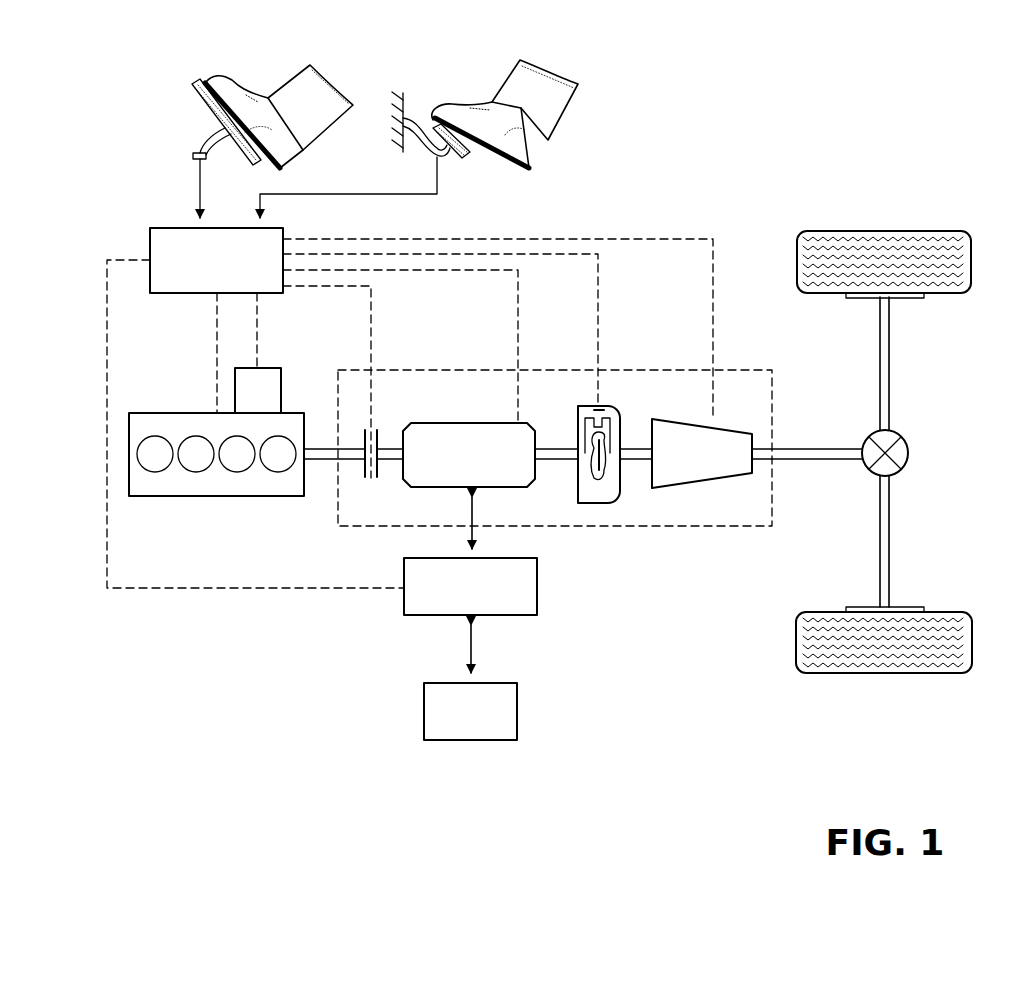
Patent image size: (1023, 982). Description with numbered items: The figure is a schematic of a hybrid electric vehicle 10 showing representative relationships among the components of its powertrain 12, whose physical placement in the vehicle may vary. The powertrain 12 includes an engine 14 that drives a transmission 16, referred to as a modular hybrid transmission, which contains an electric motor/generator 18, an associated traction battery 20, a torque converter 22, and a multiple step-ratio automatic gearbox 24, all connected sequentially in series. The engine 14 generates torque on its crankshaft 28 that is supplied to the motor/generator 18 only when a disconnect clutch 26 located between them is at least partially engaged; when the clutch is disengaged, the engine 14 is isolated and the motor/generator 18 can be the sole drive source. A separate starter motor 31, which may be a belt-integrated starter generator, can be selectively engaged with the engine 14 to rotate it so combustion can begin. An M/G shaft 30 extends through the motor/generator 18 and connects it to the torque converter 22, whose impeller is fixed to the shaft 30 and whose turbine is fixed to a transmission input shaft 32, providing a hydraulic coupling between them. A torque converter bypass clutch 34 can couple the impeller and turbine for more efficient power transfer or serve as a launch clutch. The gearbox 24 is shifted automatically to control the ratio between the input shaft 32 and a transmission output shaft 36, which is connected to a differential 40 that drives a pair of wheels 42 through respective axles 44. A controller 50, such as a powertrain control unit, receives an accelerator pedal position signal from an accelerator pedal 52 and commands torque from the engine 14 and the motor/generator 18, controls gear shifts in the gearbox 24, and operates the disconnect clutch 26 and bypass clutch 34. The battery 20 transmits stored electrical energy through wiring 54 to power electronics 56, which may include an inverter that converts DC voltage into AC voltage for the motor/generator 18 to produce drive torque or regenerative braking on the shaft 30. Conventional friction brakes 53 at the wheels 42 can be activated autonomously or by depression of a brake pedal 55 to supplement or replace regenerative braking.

The hybrid electric vehicle 10 is at (690, 156).
The powertrain 12 is at (318, 630).
The engine 14 is at (178, 413).
The transmission 16 is at (568, 370).
The electric motor/generator 18 is at (473, 423).
The traction battery 20 is at (424, 712).
The torque converter 22 is at (597, 503).
The gearbox 24 is at (700, 487).
The disconnect clutch 26 is at (378, 468).
The crankshaft 28 is at (333, 448).
The M/G shaft 30 is at (390, 448).
The starter motor 31 is at (271, 368).
The transmission input shaft 32 is at (632, 448).
The torque converter bypass clutch 34 is at (607, 412).
The transmission output shaft 36 is at (820, 448).
The differential 40 is at (910, 455).
The wheels 42 is at (885, 231).
The axles 44 is at (893, 363).
The controller 50 is at (175, 228).
The accelerator pedal 52 is at (196, 110).
The friction brakes 53 is at (905, 298).
The wiring 54 is at (468, 657).
The brake pedal 55 is at (462, 162).
The power electronics 56 is at (537, 585).